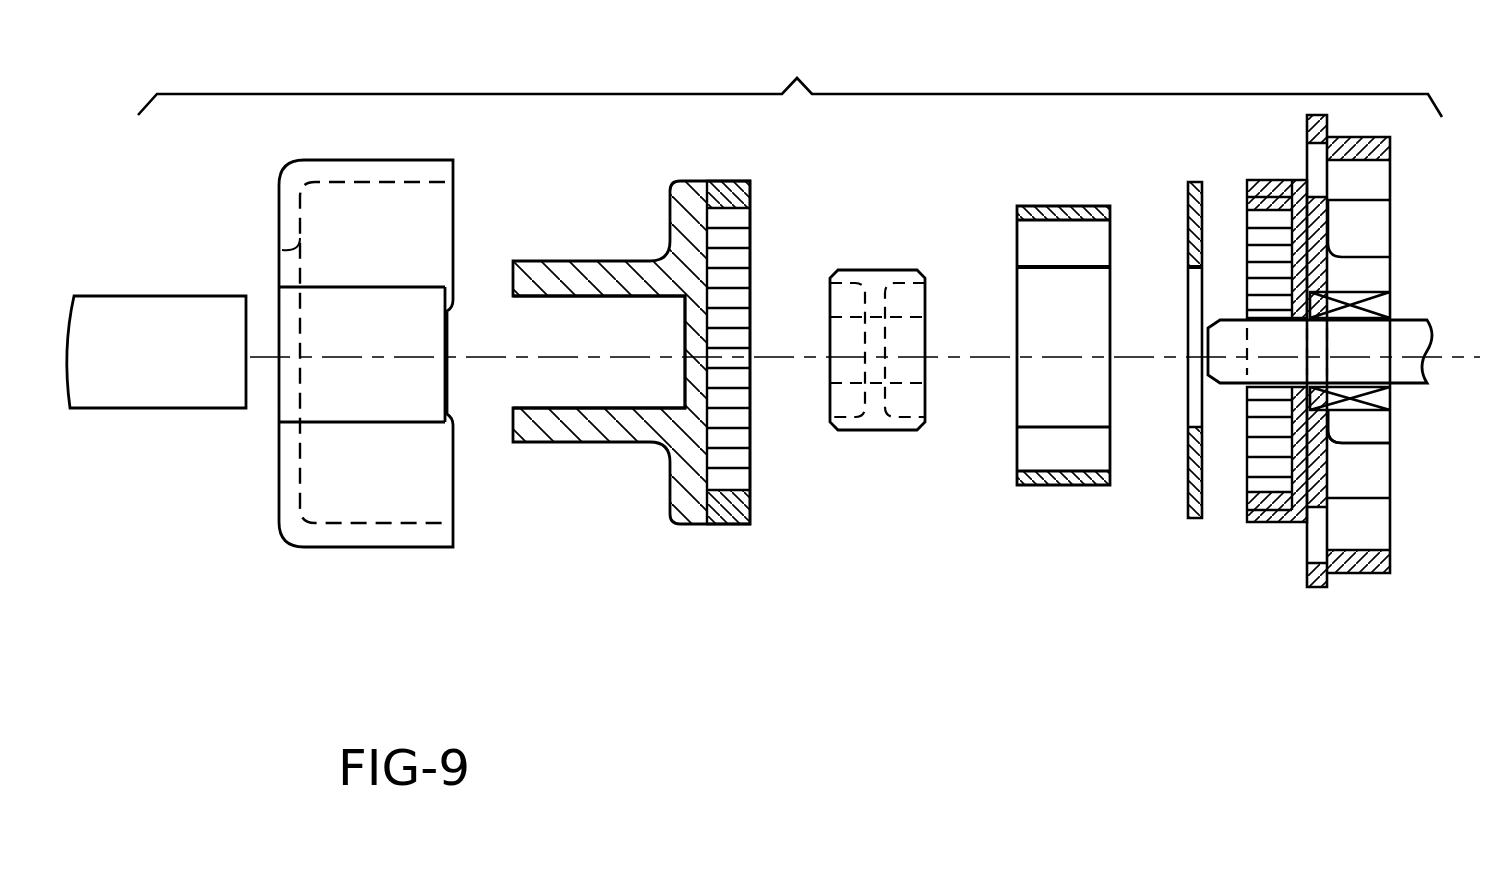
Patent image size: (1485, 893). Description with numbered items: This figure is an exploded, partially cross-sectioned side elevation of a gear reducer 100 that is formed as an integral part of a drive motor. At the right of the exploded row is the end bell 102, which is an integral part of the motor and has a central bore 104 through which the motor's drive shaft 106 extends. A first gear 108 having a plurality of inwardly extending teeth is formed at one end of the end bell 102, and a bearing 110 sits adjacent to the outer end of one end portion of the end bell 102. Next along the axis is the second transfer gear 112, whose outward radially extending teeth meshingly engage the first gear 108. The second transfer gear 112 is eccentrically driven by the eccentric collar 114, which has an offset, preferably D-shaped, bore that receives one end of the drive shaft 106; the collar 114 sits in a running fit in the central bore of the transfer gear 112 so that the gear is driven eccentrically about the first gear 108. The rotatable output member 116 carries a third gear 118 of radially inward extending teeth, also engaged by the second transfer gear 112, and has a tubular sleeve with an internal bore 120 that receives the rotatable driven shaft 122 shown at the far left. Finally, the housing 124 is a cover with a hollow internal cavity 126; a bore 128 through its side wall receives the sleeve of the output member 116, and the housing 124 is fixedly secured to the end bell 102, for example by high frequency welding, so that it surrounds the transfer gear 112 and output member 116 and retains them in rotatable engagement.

The gear reducer 100 is at (790, 76).
The end bell 102 is at (1355, 137).
The central bore 104 is at (1358, 378).
The drive shaft 106 is at (1401, 330).
The first gear 108 is at (1273, 458).
The bearing 110 is at (1192, 522).
The second transfer gear 112 is at (1062, 487).
The eccentric collar 114 is at (882, 430).
The output member 116 is at (640, 444).
The third gear 118 is at (737, 465).
The internal bore 120 is at (546, 396).
The driven shaft 122 is at (150, 398).
The housing 124 is at (367, 543).
The hollow internal cavity 126 is at (343, 523).
The bore 128 is at (290, 458).